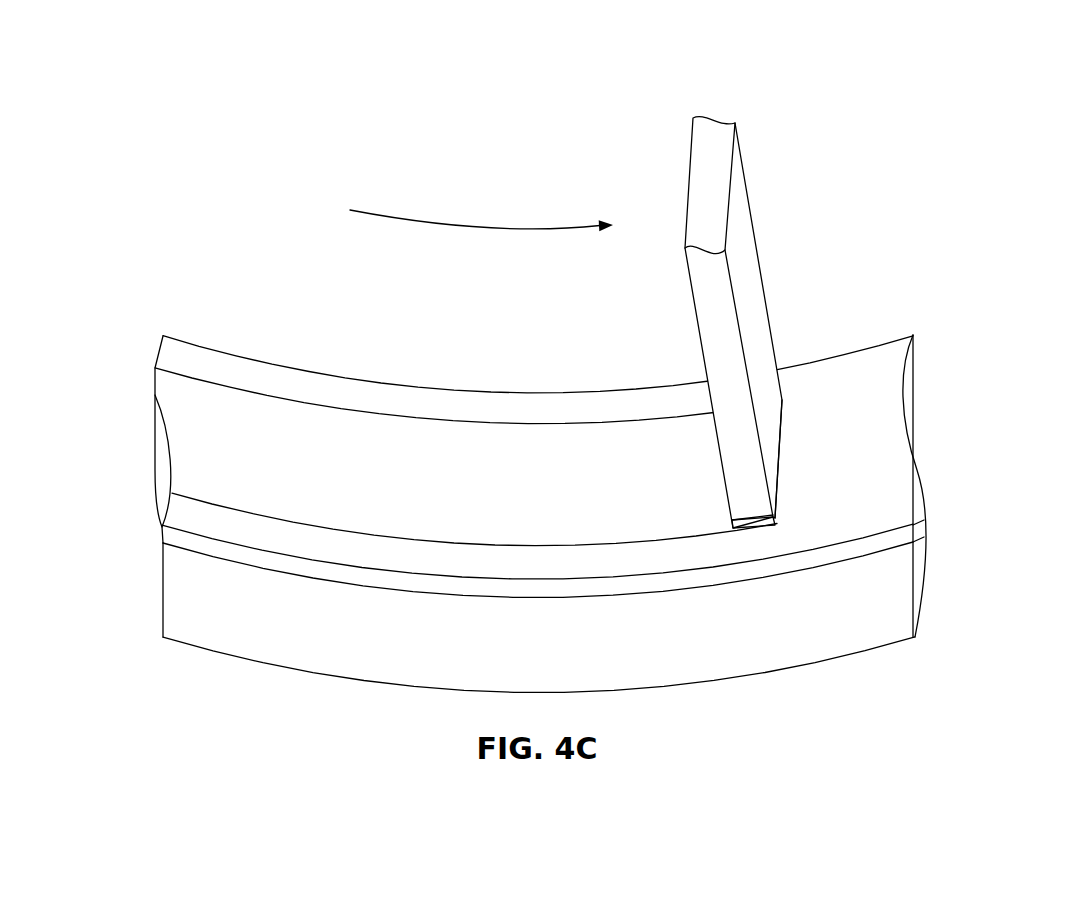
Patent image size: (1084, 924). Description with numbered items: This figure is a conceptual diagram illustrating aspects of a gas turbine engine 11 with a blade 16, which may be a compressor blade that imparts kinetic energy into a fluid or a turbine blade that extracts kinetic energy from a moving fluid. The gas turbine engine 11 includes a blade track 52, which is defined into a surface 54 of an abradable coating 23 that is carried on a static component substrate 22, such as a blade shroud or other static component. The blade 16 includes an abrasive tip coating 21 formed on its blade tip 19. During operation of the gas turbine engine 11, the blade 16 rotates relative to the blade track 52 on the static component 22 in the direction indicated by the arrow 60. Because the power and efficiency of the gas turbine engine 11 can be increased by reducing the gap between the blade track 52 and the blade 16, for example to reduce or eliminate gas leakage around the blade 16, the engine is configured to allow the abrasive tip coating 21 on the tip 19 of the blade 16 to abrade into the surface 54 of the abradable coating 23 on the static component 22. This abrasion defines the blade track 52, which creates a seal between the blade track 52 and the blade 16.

The gas turbine engine 11 is at (236, 52).
The blade 16 is at (790, 232).
The blade tip 19 is at (782, 468).
The abrasive tip coating 21 is at (732, 528).
The static component substrate 22 is at (175, 595).
The abradable coating 23 is at (162, 537).
The blade track 52 is at (270, 322).
The surface 54 is at (865, 363).
The arrow 60 is at (443, 225).